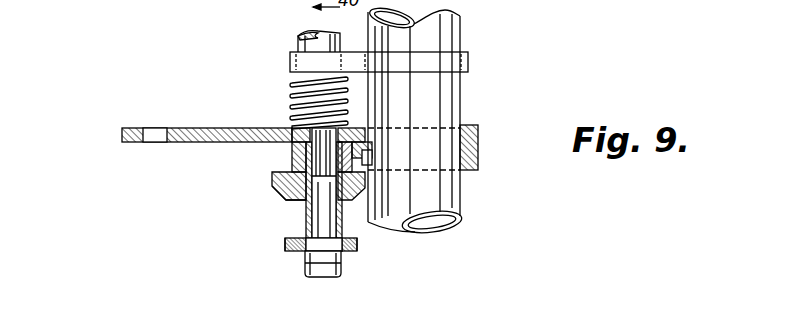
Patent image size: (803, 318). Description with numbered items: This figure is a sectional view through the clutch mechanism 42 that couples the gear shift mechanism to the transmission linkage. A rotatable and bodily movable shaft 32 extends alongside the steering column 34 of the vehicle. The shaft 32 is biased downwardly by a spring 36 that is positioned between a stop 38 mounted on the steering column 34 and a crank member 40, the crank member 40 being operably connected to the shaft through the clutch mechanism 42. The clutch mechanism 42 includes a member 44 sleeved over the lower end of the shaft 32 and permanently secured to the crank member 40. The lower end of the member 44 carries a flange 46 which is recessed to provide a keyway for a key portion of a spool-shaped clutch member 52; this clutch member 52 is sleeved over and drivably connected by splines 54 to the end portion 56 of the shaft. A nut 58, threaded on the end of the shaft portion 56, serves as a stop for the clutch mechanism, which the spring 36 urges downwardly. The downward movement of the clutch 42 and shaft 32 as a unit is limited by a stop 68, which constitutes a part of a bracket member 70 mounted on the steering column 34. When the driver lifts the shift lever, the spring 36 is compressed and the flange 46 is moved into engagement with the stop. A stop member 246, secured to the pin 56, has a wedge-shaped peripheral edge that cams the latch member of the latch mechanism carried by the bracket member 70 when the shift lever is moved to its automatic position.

The shaft 32 is at (298, 42).
The steering column 34 is at (456, 204).
The spring 36 is at (292, 90).
The stop 38 is at (440, 55).
The crank member 40 is at (190, 128).
The clutch mechanism 42 is at (278, 191).
The member 44 is at (292, 155).
The flange 46 is at (276, 180).
The clutch member 52 is at (295, 206).
The splines 54 is at (298, 136).
The end portion of the shaft 56 is at (343, 252).
The nut 58 is at (316, 270).
The stop 68 is at (343, 193).
The bracket member 70 is at (479, 137).
The stop member 246 is at (298, 251).